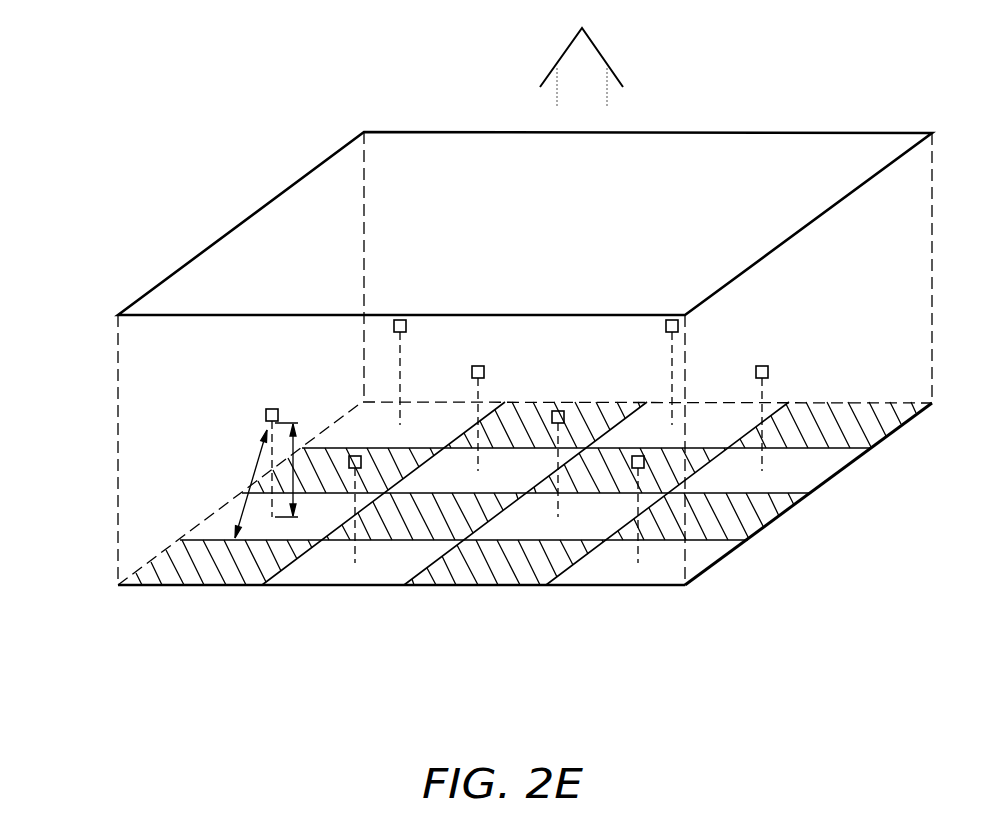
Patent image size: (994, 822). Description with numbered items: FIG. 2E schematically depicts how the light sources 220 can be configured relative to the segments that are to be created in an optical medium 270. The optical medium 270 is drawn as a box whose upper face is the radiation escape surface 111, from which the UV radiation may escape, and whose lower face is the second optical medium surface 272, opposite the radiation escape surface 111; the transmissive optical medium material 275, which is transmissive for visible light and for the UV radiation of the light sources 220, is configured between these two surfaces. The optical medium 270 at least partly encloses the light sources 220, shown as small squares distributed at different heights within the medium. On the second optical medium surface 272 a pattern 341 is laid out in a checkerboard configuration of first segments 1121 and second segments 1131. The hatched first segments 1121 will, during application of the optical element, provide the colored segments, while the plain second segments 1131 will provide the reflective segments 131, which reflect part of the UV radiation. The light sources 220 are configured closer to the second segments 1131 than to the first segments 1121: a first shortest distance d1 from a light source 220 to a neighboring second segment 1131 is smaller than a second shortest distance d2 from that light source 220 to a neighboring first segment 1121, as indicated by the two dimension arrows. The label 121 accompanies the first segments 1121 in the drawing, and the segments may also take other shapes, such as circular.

The radiation escape surface 111 is at (227, 257).
The transmissive optical medium material 275 is at (846, 268).
The optical medium 270 is at (475, 358).
The second optical medium surface 272 is at (517, 545).
The pattern 341 is at (175, 596).
The light sources 220 is at (404, 319).
The hatched region 121 is at (526, 538).
The first segments 1121 is at (233, 572).
The reflective segments 131 is at (525, 538).
The second segments 1131 is at (375, 573).
The first shortest distance d1 is at (297, 470).
The second shortest distance d2 is at (250, 478).